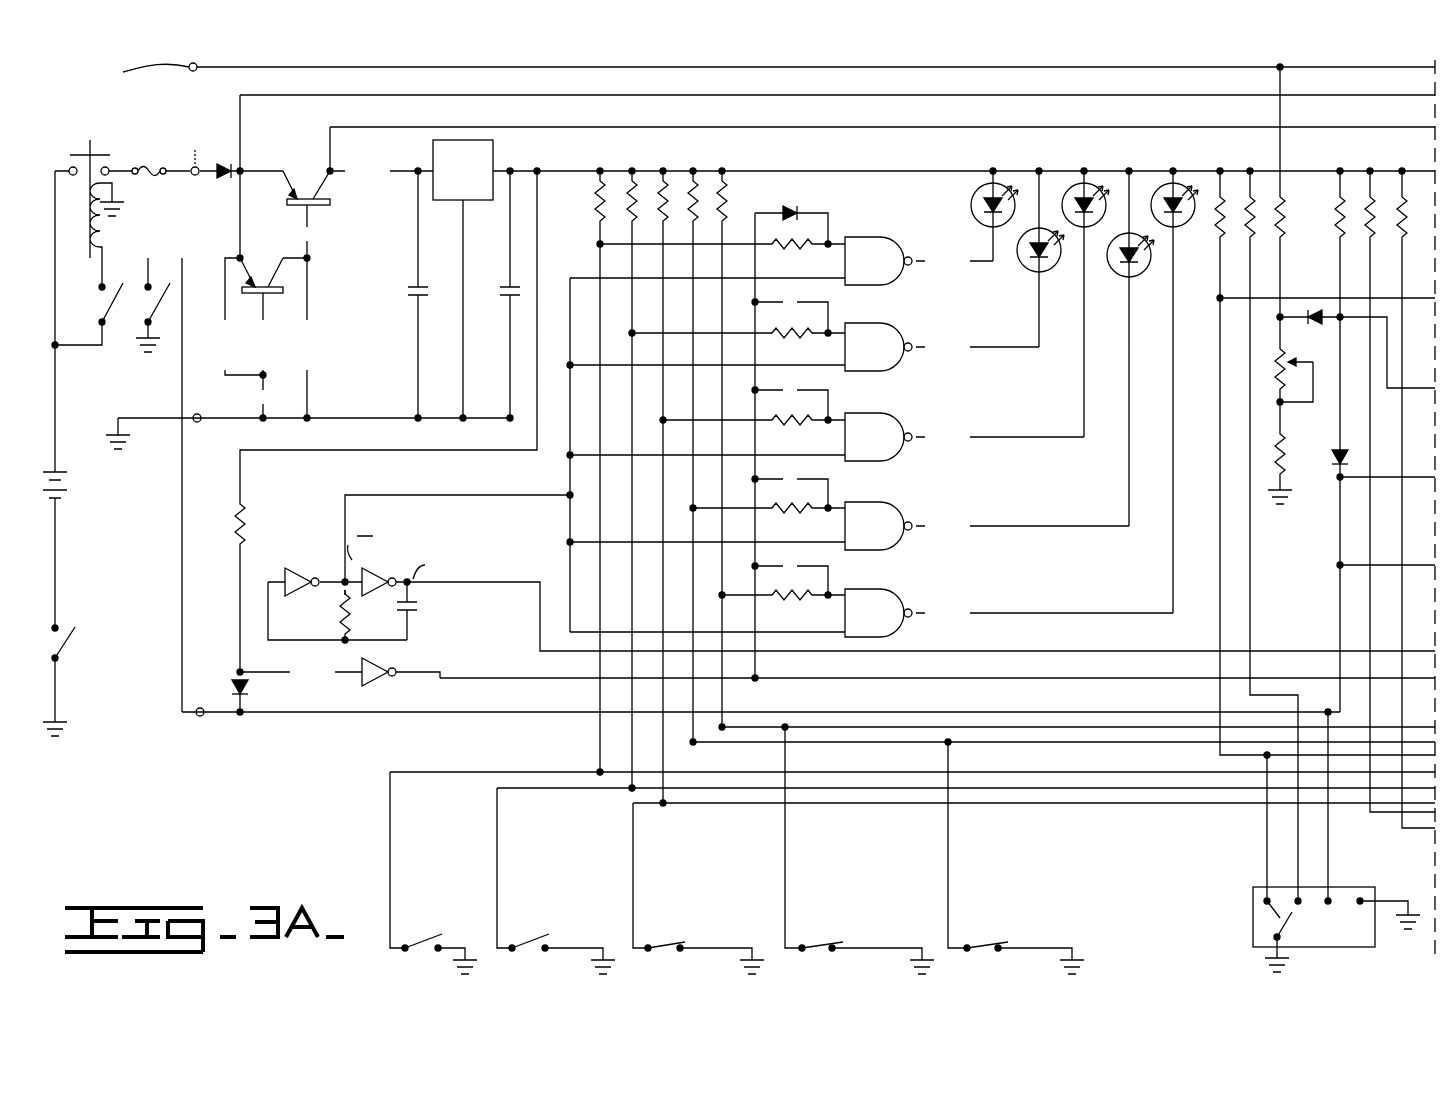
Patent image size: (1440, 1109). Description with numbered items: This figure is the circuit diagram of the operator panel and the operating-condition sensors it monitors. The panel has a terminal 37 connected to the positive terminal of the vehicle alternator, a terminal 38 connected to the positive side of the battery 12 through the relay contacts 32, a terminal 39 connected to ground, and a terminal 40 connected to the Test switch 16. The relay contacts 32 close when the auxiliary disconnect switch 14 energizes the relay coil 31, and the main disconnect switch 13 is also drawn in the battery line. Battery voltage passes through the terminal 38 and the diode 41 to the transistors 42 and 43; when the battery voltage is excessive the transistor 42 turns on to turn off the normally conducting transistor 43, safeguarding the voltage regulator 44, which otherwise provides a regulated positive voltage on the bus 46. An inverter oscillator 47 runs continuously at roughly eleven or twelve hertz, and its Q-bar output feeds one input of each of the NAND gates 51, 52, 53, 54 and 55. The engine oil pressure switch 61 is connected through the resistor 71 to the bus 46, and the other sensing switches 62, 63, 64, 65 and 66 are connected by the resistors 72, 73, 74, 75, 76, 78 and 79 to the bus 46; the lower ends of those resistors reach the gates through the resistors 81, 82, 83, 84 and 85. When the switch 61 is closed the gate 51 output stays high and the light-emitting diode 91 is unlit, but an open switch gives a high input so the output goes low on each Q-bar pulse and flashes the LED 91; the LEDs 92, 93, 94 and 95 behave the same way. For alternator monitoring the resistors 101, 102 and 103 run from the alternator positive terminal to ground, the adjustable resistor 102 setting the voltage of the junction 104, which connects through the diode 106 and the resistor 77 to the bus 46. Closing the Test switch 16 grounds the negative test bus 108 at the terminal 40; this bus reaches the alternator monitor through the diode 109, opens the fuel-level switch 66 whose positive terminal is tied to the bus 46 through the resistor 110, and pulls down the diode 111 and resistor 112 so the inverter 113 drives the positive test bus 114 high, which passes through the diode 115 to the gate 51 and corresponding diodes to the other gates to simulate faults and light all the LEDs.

The battery 12 is at (68, 490).
The main disconnect switch 13 is at (74, 649).
The auxiliary disconnect switch 14 is at (100, 304).
The Test switch 16 is at (152, 310).
The relay coil 31 is at (101, 228).
The relay contacts 32 is at (94, 140).
The terminal 37 is at (166, 73).
The terminal 38 is at (194, 152).
The terminal 39 is at (195, 424).
The terminal 40 is at (200, 718).
The diode 41 is at (217, 188).
The transistor 42 is at (259, 283).
The transistor 43 is at (332, 203).
The voltage regulator 44 is at (447, 204).
The bus 46 is at (840, 170).
The inverter oscillator 47 is at (327, 570).
The NAND gate 51 is at (857, 273).
The NAND gate 52 is at (857, 359).
The NAND gate 53 is at (857, 449).
The NAND gate 54 is at (857, 538).
The NAND gate 55 is at (857, 625).
The engine oil pressure switch 61 is at (426, 956).
The coolant flow switch 62 is at (530, 954).
The thermal trip switch 63 is at (668, 954).
The thermal trip switch 64 is at (826, 952).
The thermal trip switch 65 is at (989, 952).
The fluid level switch 66 is at (1289, 920).
The resistor 71 is at (592, 212).
The resistor 72 is at (610, 174).
The resistor 73 is at (656, 170).
The resistor 74 is at (696, 172).
The resistor 75 is at (728, 191).
The resistor 76 is at (1217, 240).
The resistor 77 is at (1336, 198).
The resistor 78 is at (1358, 178).
The resistor 79 is at (1413, 179).
The resistor 81 is at (790, 250).
The resistor 82 is at (790, 337).
The resistor 83 is at (790, 425).
The resistor 84 is at (790, 514).
The resistor 85 is at (790, 600).
The light-emitting diode 91 is at (970, 204).
The light-emitting diode 92 is at (1020, 269).
The light-emitting diode 93 is at (1070, 174).
The light-emitting diode 94 is at (1118, 280).
The light-emitting diode 95 is at (1162, 174).
The resistor 101 is at (1286, 238).
The resistor 102 is at (1286, 388).
The resistor 103 is at (1288, 460).
The junction 104 is at (1284, 326).
The diode 106 is at (1326, 311).
The negative test bus 108 is at (374, 716).
The diode 109 is at (1284, 432).
The resistor 110 is at (1244, 178).
The diode 111 is at (236, 673).
The resistor 112 is at (238, 503).
The inverter 113 is at (376, 683).
The positive test bus 114 is at (864, 682).
The diode 115 is at (788, 199).